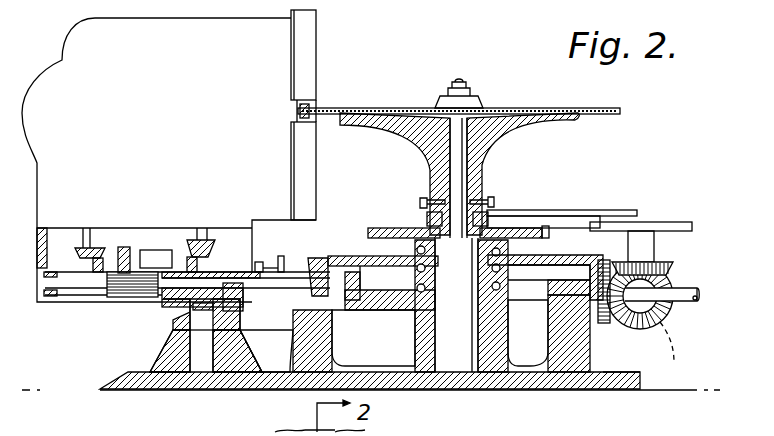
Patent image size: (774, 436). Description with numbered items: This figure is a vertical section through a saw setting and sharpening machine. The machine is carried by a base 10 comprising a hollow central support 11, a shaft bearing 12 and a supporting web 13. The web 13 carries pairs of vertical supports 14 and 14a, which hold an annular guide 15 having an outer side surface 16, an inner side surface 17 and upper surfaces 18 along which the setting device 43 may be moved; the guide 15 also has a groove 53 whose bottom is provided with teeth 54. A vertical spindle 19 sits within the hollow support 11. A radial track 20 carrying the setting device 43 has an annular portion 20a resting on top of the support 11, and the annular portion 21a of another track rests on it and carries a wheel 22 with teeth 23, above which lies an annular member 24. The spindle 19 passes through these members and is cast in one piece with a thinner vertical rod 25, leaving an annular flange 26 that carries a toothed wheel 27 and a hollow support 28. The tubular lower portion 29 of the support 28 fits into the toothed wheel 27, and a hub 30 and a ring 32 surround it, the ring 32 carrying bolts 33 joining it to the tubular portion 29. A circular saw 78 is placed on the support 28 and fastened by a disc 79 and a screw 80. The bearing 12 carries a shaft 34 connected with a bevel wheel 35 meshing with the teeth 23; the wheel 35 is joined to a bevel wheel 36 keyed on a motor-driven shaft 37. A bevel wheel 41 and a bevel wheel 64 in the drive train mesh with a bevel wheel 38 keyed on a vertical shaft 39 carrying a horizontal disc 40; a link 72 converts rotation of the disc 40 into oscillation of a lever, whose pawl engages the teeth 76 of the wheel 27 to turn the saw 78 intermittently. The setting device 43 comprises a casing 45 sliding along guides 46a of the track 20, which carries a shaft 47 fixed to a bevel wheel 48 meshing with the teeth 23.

The base 10 is at (492, 380).
The hollow central support 11 is at (418, 340).
The shaft bearing 12 is at (552, 340).
The supporting web 13 is at (275, 383).
The vertical support 14 is at (180, 362).
The vertical support 14a is at (233, 352).
The annular guide 15 is at (180, 310).
The outer side surface 16 is at (173, 299).
The inner side surface 17 is at (238, 320).
The upper surfaces 18 is at (228, 292).
The vertical spindle 19 is at (450, 357).
The radial track 20 is at (333, 295).
The annular portion 20a is at (556, 287).
The annular portion 21a is at (503, 275).
The wheel 22 is at (545, 254).
The teeth 23 is at (603, 254).
The annular member 24 is at (380, 256).
The vertical rod 25 is at (482, 168).
The annular flange 26 is at (475, 240).
The toothed wheel 27 is at (397, 230).
The hollow support 28 is at (518, 127).
The tubular lower portion 29 is at (493, 211).
The hub 30 is at (430, 214).
The ring 32 is at (433, 200).
The bolts 33 is at (493, 208).
The shaft 34 is at (558, 297).
The bevel wheel 35 is at (599, 326).
The bevel wheel 36 is at (633, 328).
The shaft 37 is at (690, 298).
The bevel wheel 38 is at (673, 268).
The vertical shaft 39 is at (652, 244).
The horizontal disc 40 is at (665, 222).
The bevel wheel 41 is at (665, 311).
The setting device 43 is at (322, 49).
The casing 45 is at (310, 160).
The guides 46a is at (158, 300).
The shaft 47 is at (260, 278).
The bevel wheel 48 is at (323, 258).
The groove 53 is at (196, 316).
The teeth 54 is at (182, 327).
The bevel wheel 64 is at (676, 345).
The link 72 is at (608, 211).
The teeth 76 is at (373, 227).
The circular saw 78 is at (562, 107).
The disc 79 is at (481, 101).
The screw 80 is at (460, 88).